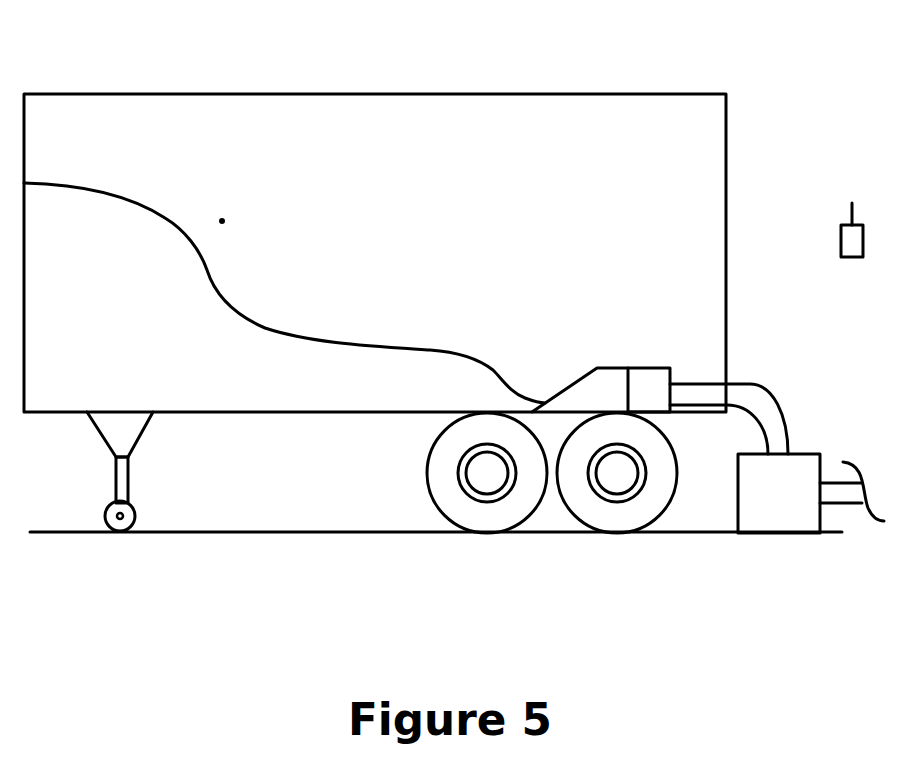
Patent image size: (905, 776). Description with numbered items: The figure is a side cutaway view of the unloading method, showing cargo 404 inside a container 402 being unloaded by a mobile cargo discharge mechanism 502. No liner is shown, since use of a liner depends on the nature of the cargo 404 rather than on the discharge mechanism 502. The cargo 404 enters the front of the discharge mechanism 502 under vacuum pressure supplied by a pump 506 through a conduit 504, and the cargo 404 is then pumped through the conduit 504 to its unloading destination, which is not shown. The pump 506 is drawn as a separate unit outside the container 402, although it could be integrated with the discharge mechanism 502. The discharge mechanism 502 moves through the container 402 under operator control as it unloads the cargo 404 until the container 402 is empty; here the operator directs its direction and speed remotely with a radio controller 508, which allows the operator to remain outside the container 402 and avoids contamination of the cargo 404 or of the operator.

The container 402 is at (300, 94).
The cargo 404 is at (183, 345).
The mobile cargo discharge mechanism 502 is at (648, 367).
The conduit 504 is at (760, 398).
The pump 506 is at (798, 488).
The radio controller 508 is at (841, 245).